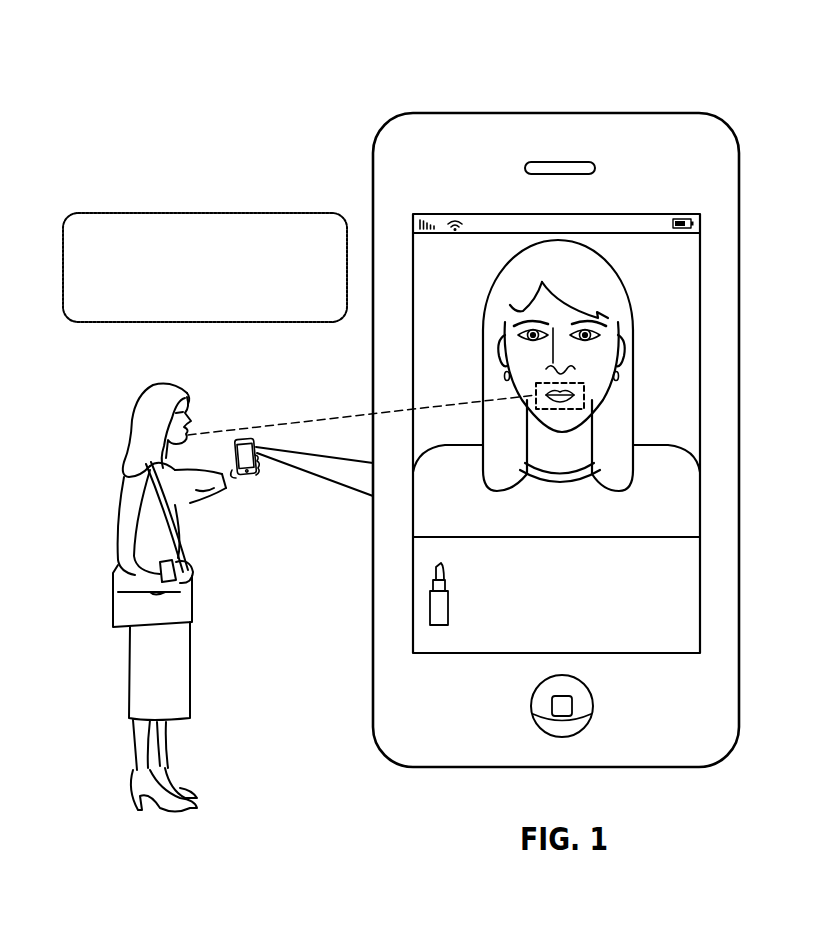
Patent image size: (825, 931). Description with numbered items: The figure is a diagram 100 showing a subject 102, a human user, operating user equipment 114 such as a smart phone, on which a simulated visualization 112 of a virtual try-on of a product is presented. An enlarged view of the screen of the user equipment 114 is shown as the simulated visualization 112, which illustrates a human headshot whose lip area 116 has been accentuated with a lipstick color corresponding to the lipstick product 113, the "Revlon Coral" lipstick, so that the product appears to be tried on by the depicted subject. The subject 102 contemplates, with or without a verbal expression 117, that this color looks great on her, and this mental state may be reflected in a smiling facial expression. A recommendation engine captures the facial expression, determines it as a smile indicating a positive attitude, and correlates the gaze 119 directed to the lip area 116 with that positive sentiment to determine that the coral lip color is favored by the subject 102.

The diagram 100 is at (573, 70).
The subject 102 is at (158, 383).
The simulated visualization 112 is at (670, 292).
The lipstick product 113 is at (648, 614).
The user equipment 114 is at (257, 438).
The lip area 116 is at (584, 392).
The verbal expression 117 is at (135, 212).
The gaze 119 is at (292, 422).